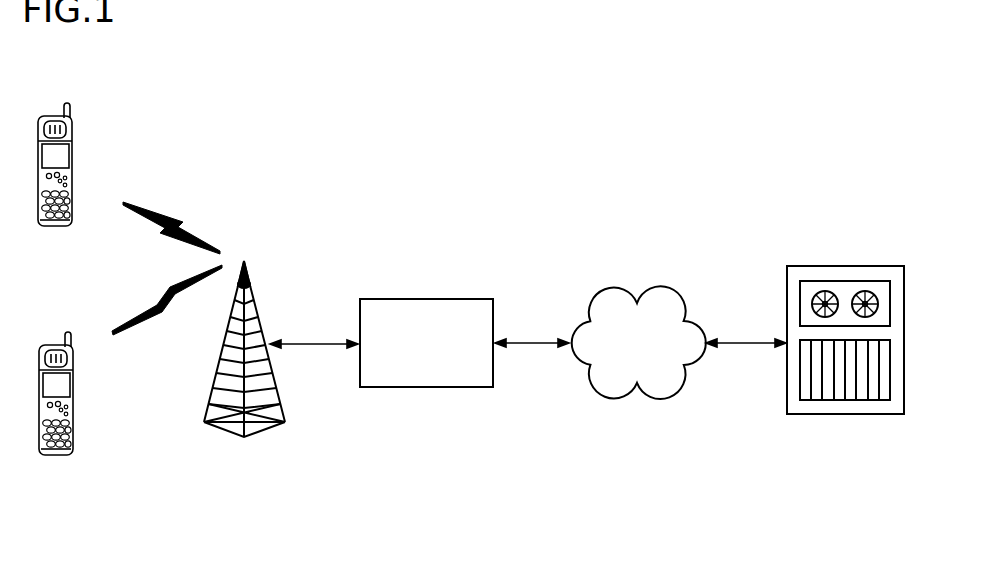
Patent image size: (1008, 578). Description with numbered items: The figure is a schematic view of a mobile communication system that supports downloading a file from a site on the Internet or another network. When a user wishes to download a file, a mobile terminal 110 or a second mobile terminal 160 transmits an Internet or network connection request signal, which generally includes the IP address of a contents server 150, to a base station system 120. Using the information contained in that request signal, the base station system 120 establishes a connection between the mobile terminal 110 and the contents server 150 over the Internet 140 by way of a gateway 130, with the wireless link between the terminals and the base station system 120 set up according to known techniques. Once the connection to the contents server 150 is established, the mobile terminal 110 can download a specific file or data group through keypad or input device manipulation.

The mobile terminal 110 is at (58, 455).
The mobile terminal 160 is at (75, 163).
The base station system 120 is at (255, 297).
The gateway 130 is at (427, 298).
The Internet 140 is at (610, 287).
The contents server 150 is at (832, 265).